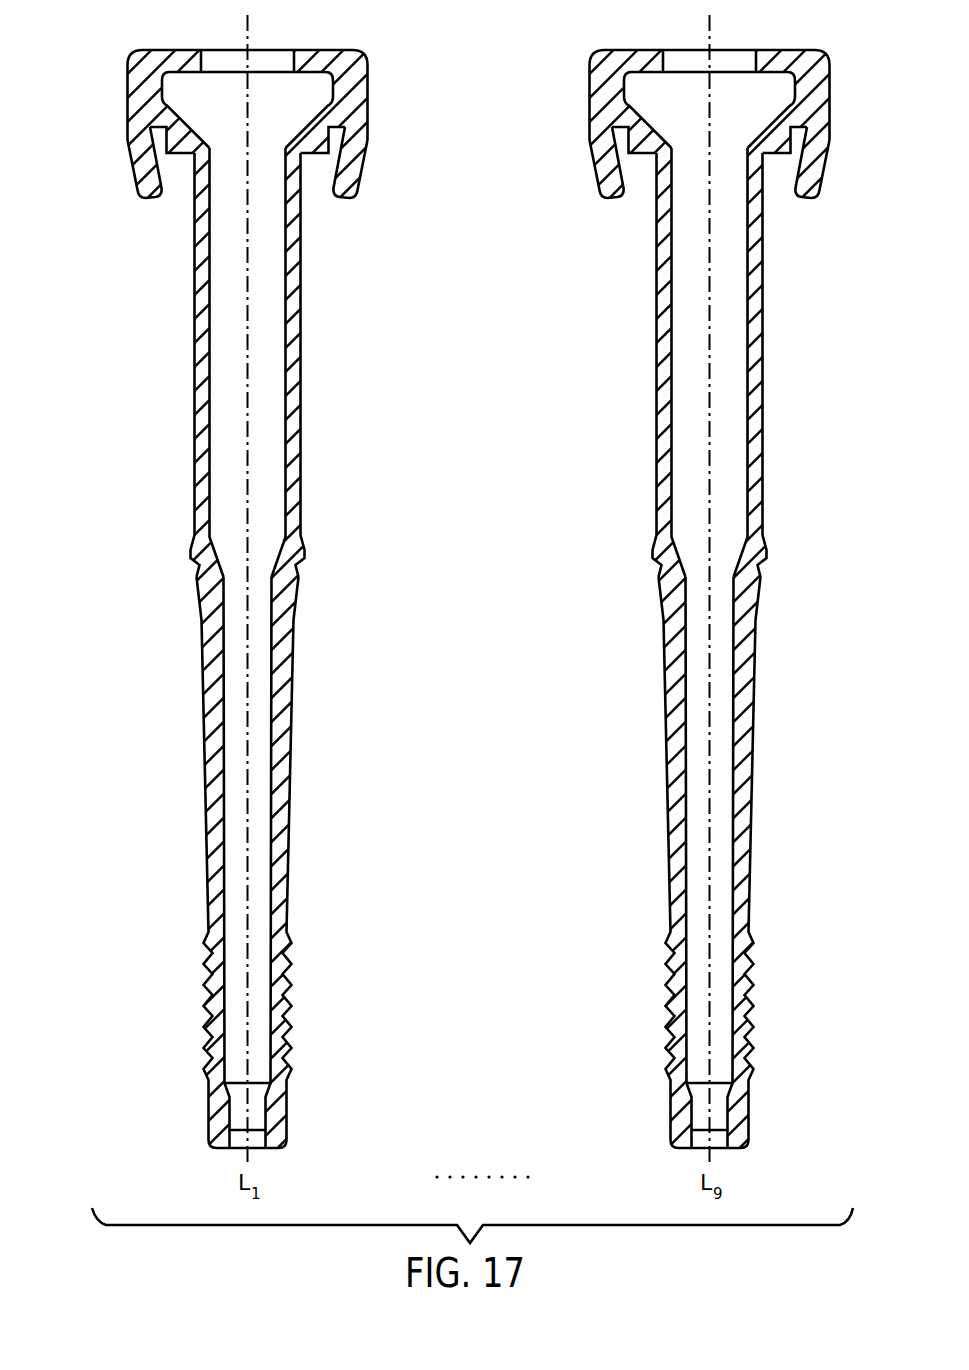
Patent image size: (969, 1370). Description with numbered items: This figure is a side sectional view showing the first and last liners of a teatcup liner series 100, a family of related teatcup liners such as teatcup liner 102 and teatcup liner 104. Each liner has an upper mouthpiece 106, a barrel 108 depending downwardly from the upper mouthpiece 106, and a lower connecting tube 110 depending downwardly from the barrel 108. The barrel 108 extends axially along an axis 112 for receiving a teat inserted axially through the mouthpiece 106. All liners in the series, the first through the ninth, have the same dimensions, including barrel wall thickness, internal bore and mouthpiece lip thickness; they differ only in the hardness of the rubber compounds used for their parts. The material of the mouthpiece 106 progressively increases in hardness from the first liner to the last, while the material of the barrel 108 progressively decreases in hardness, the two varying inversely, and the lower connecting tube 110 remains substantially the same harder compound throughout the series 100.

The teatcup liner series 100 is at (421, 108).
The teatcup liner 102 is at (134, 55).
The teatcup liner 104 is at (828, 60).
The upper mouthpiece 106 is at (128, 125).
The barrel 108 is at (195, 367).
The lower connecting tube 110 is at (203, 718).
The axis 112 is at (247, 462).